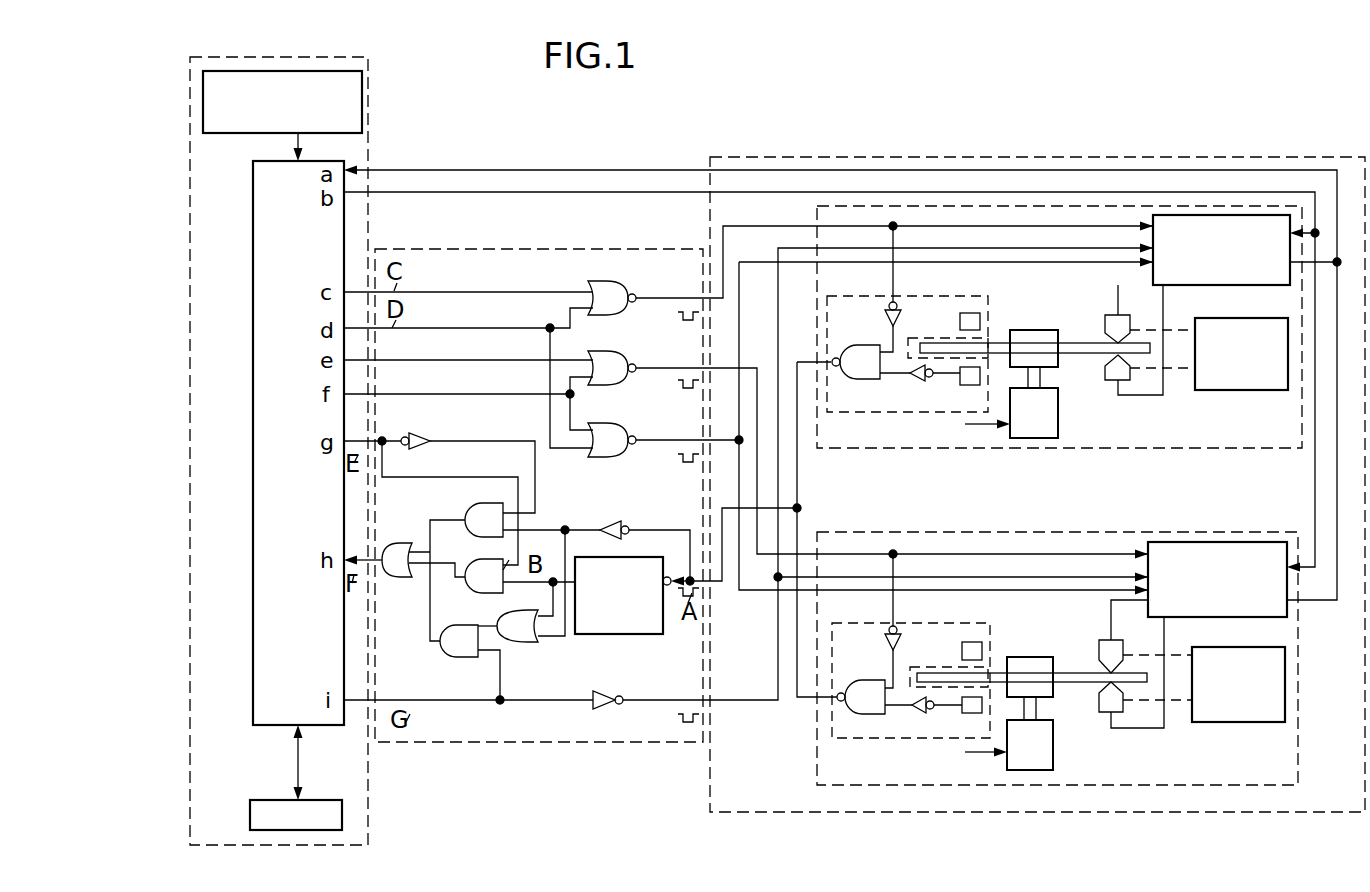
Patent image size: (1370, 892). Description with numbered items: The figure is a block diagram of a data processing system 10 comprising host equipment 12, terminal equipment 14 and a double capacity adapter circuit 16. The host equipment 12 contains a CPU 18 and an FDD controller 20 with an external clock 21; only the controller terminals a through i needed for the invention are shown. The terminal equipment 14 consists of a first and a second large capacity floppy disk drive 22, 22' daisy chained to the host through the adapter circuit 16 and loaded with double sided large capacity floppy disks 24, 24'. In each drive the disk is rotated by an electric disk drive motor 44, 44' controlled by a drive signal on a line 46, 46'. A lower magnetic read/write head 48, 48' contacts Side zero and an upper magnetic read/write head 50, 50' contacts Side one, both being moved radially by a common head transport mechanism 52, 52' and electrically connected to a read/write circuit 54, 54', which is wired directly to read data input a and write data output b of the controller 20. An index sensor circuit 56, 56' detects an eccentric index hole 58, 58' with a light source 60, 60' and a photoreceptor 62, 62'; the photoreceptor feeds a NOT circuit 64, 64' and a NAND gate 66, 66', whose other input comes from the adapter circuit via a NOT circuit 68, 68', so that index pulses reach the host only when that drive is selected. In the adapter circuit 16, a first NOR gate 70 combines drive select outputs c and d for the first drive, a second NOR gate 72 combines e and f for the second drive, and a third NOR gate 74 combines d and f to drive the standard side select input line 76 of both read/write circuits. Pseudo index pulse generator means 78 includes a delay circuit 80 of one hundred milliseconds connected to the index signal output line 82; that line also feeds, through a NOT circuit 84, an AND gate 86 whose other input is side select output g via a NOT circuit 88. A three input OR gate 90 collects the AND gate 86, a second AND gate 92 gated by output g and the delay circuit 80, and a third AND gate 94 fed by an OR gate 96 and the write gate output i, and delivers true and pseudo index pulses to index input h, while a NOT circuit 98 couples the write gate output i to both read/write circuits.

The data processing system 10 is at (962, 132).
The host equipment 12 is at (372, 150).
The terminal equipment 14 is at (1148, 156).
The double capacity adapter circuit 16 is at (494, 249).
The CPU 18 is at (254, 800).
The FDD controller 20 is at (252, 246).
The external clock 21 is at (230, 134).
The first large capacity floppy disk drive 22 is at (1059, 346).
The second large capacity floppy disk drive 22' is at (1057, 637).
The large capacity floppy disk 24 is at (1035, 321).
The large capacity floppy disk 24' is at (1032, 656).
The disk drive motor 44 is at (1052, 389).
The disk drive motor 44' is at (1052, 717).
The line 46 is at (970, 437).
The line 46' is at (968, 767).
The lower magnetic read/write head 48 is at (1124, 349).
The lower magnetic read/write head 48' is at (1117, 680).
The upper magnetic read/write head 50 is at (1105, 306).
The upper magnetic read/write head 50' is at (1110, 636).
The head transport mechanism 52 is at (1209, 372).
The head transport mechanism 52' is at (1204, 703).
The read/write circuit 54 is at (1221, 264).
The read/write circuit 54' is at (1217, 592).
The index sensor circuit 56 is at (907, 335).
The index sensor circuit 56' is at (911, 664).
The index hole 58 is at (970, 322).
The index hole 58' is at (972, 653).
The light source 60 is at (952, 319).
The light source 60' is at (954, 646).
The photoreceptor 62 is at (957, 390).
The photoreceptor 62' is at (956, 719).
The NOT circuit 64 is at (920, 389).
The NOT circuit 64' is at (922, 719).
The NAND gate 66 is at (856, 379).
The NAND gate 66' is at (859, 725).
The NOT circuit 68 is at (869, 289).
The NOT circuit 68' is at (873, 621).
The first NOR gate 70 is at (610, 292).
The second NOR gate 72 is at (611, 350).
The third NOR gate 74 is at (609, 423).
The side select input line 76 is at (670, 428).
The pseudo index pulse generator means 78 is at (571, 500).
The delay circuit 80 is at (603, 636).
The index signal output line 82 is at (706, 584).
The NOT circuit 84 is at (610, 518).
The AND gate 86 is at (478, 506).
The NOT circuit 88 is at (424, 436).
The OR gate 90 is at (400, 582).
The second AND gate 92 is at (478, 594).
The third AND gate 94 is at (470, 658).
The OR gate 96 is at (527, 644).
The NOT circuit 98 is at (608, 708).